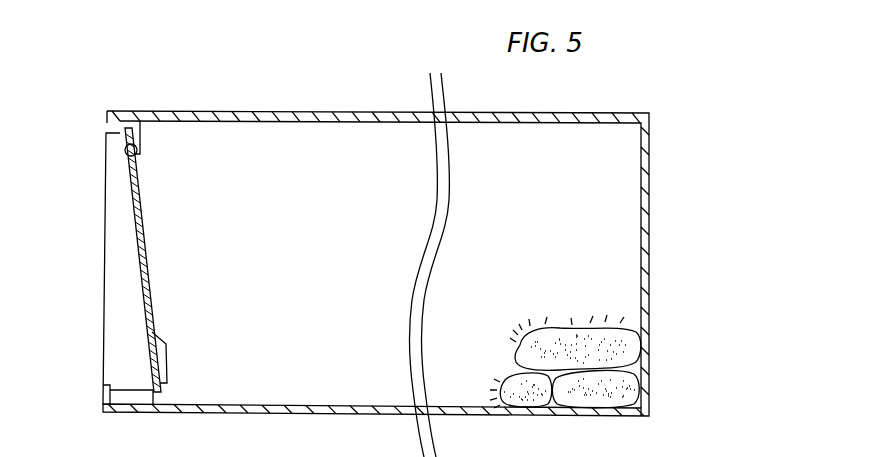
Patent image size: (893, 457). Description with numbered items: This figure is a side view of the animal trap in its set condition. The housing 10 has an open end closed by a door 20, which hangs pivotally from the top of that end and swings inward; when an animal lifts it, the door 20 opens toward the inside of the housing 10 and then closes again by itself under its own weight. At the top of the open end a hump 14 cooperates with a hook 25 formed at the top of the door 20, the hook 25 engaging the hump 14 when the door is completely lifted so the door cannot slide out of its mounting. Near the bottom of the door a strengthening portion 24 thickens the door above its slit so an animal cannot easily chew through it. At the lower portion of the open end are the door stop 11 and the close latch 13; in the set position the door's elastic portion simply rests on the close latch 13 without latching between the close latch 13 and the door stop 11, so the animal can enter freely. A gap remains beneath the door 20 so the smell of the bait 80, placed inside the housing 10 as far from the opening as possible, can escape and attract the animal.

The housing 10 is at (318, 118).
The door stop 11 is at (103, 390).
The close latch 13 is at (136, 397).
The hump 14 is at (137, 113).
The door 20 is at (143, 237).
The strengthening portion 24 is at (172, 357).
The hook 25 is at (138, 175).
The bait 80 is at (562, 338).